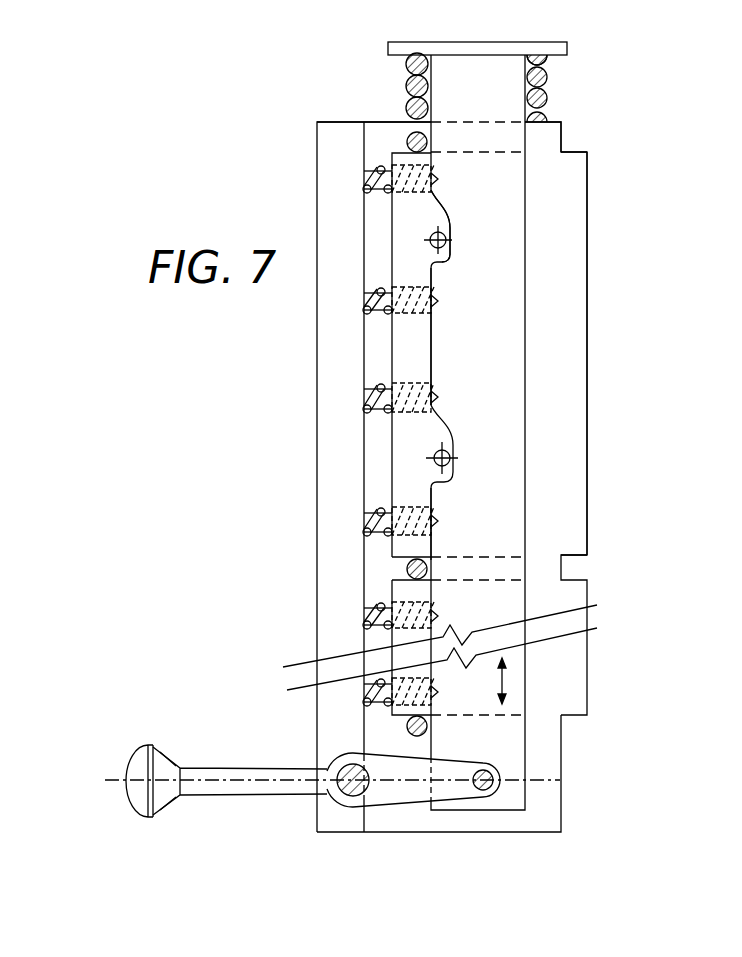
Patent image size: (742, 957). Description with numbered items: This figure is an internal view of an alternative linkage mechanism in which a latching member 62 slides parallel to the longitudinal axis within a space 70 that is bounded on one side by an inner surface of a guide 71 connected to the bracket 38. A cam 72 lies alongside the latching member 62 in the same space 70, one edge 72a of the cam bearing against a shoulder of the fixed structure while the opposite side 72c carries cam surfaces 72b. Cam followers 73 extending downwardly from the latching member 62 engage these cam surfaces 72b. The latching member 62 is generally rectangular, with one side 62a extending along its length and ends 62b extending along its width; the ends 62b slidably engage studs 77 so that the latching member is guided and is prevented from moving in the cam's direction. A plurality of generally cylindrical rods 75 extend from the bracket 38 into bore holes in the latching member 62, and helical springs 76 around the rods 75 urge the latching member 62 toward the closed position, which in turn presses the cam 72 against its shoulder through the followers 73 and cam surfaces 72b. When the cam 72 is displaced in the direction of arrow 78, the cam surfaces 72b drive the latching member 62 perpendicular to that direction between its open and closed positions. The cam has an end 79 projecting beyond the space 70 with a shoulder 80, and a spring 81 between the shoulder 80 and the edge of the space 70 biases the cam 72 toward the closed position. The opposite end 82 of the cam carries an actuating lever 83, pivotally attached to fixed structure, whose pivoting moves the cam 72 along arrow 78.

The bracket 38 is at (330, 398).
The latching member 62 is at (548, 357).
The end of latching member 62a is at (574, 428).
The ends of latching member 62b is at (575, 152).
The space 70 is at (572, 138).
The guide 71 is at (376, 117).
The cam 72 is at (517, 297).
The edge of cam member 72a is at (528, 500).
The cam surfaces 72b is at (431, 210).
The opposite side of cam 72c is at (432, 357).
The cam followers 73 is at (450, 240).
The cylindrical rods 75 is at (386, 294).
The helical springs 76 is at (388, 314).
The studs 77 is at (406, 140).
The arrow 78 is at (507, 678).
The end of cam 79 is at (547, 74).
The shoulder 80 is at (567, 50).
The spring 81 is at (547, 100).
The opposite end of cam 82 is at (520, 768).
The actuating lever 83 is at (245, 772).